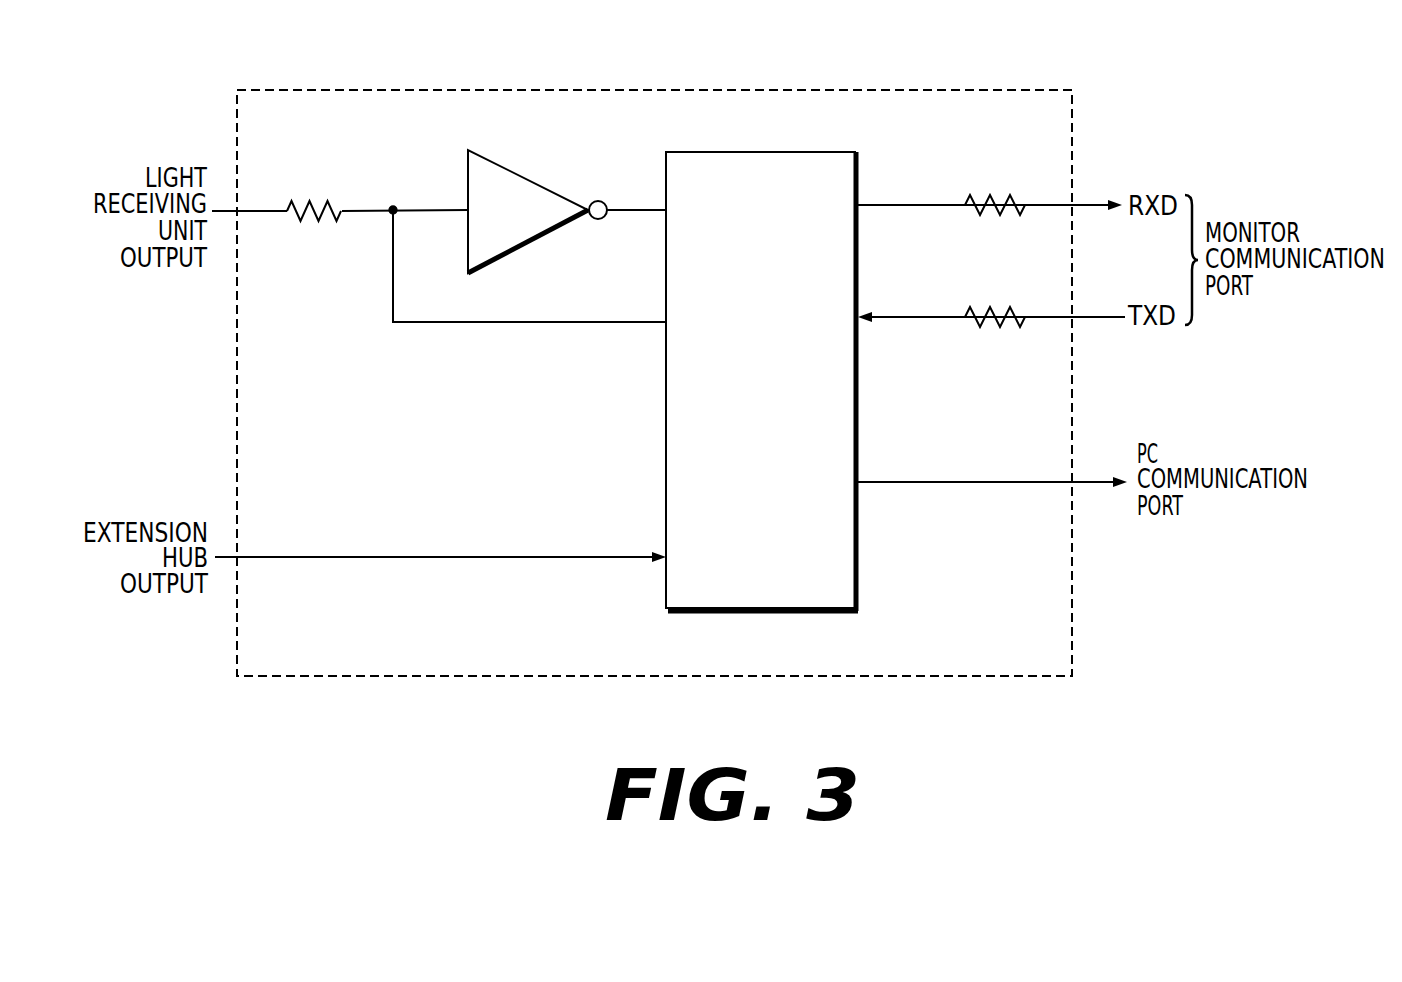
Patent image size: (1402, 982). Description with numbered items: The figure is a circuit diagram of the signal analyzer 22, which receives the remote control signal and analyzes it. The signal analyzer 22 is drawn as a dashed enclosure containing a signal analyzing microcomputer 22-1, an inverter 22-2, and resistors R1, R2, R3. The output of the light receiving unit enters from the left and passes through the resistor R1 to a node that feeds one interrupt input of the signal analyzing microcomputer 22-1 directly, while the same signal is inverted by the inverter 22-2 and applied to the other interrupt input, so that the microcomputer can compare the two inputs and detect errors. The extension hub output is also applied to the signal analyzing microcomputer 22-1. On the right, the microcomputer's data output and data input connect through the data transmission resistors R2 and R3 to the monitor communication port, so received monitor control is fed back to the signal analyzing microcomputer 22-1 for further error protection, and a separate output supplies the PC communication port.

The signal analyzer 22 is at (777, 89).
The signal analyzing microcomputer 22-1 is at (666, 441).
The inverter 22-2 is at (535, 180).
The resistor R1 is at (314, 190).
The data transmission resistor R2 is at (995, 184).
The data transmission resistor R3 is at (995, 297).